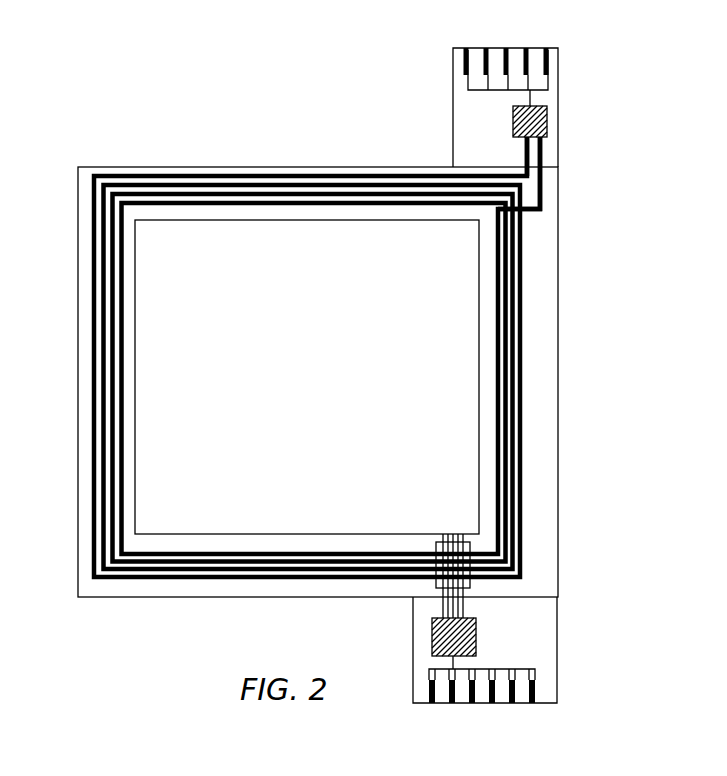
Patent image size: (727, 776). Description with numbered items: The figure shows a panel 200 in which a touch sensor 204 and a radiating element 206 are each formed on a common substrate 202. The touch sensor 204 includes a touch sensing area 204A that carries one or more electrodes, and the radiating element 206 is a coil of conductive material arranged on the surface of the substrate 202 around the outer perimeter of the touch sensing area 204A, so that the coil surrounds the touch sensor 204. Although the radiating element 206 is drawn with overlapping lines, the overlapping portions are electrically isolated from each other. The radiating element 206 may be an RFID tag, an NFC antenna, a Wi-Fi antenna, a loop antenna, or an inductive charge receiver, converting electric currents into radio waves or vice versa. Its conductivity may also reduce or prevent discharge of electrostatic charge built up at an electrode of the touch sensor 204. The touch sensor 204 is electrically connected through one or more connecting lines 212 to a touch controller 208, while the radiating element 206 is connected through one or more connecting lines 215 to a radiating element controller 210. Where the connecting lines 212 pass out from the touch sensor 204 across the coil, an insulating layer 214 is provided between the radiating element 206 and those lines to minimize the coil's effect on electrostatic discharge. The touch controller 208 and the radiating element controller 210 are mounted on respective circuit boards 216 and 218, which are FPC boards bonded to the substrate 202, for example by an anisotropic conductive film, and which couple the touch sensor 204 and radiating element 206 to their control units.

The panel 200 is at (316, 375).
The substrate 202 is at (545, 355).
The touch sensor 204 is at (128, 342).
The touch sensing area 204A is at (155, 389).
The radiating element 206 is at (538, 225).
The touch controller 208 is at (432, 638).
The radiating element controller 210 is at (548, 118).
The connecting lines 212 is at (429, 607).
The insulating layer 214 is at (428, 543).
The connecting lines 215 is at (508, 153).
The circuit board 216 is at (543, 644).
The circuit board 218 is at (462, 103).